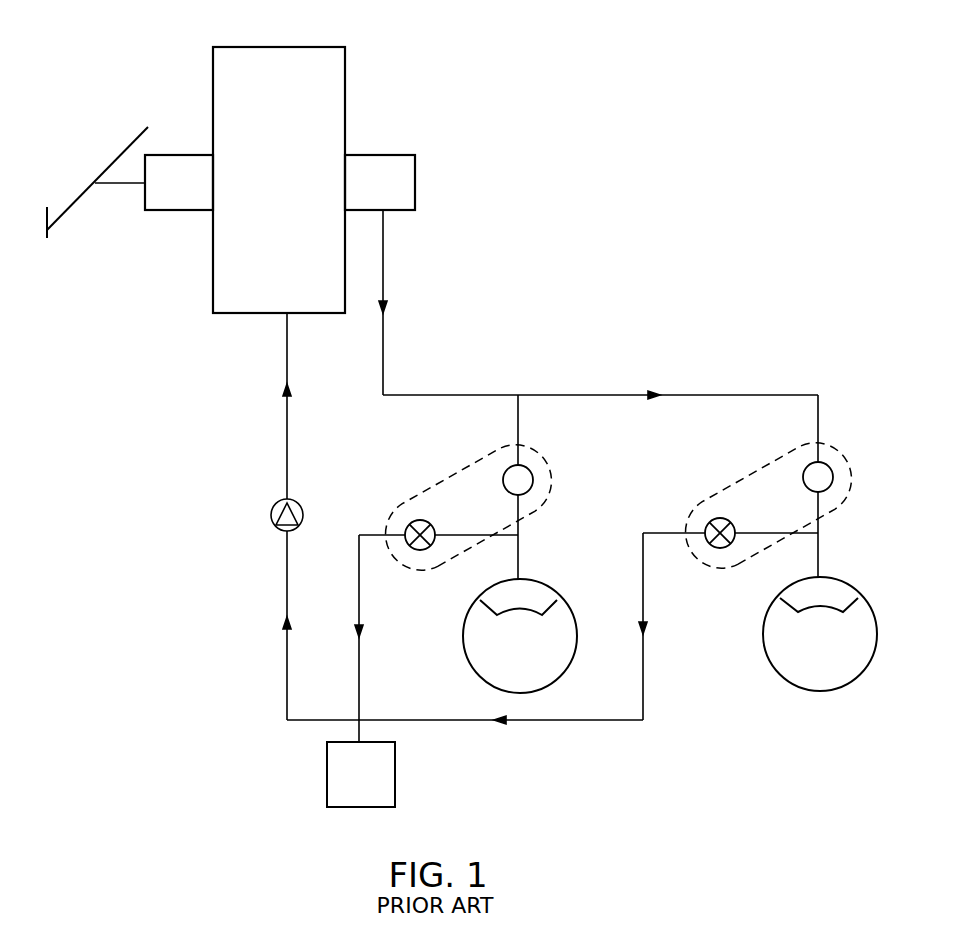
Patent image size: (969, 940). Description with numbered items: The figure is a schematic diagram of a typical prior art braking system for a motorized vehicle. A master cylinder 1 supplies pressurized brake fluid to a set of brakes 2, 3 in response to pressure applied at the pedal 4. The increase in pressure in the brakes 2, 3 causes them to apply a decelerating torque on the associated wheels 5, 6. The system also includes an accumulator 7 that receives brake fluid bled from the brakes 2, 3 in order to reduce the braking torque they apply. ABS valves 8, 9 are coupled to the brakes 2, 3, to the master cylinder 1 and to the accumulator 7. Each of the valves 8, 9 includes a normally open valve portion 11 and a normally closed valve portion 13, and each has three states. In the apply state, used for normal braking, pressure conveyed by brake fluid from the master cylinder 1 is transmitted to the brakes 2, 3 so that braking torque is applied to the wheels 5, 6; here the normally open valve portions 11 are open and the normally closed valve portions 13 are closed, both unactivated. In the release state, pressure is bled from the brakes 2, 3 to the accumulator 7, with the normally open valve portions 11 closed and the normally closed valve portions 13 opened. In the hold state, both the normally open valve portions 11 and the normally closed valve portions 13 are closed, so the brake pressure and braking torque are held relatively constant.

The master cylinder 1 is at (386, 155).
The brake 2 is at (495, 618).
The brake 3 is at (795, 616).
The pedal 4 is at (105, 172).
The wheel 5 is at (473, 647).
The wheel 6 is at (773, 647).
The accumulator 7 is at (388, 775).
The ABS valve 8 is at (445, 478).
The ABS valve 9 is at (745, 478).
The normally open valve portion 11 is at (533, 480).
The normally closed valve portion 13 is at (404, 510).